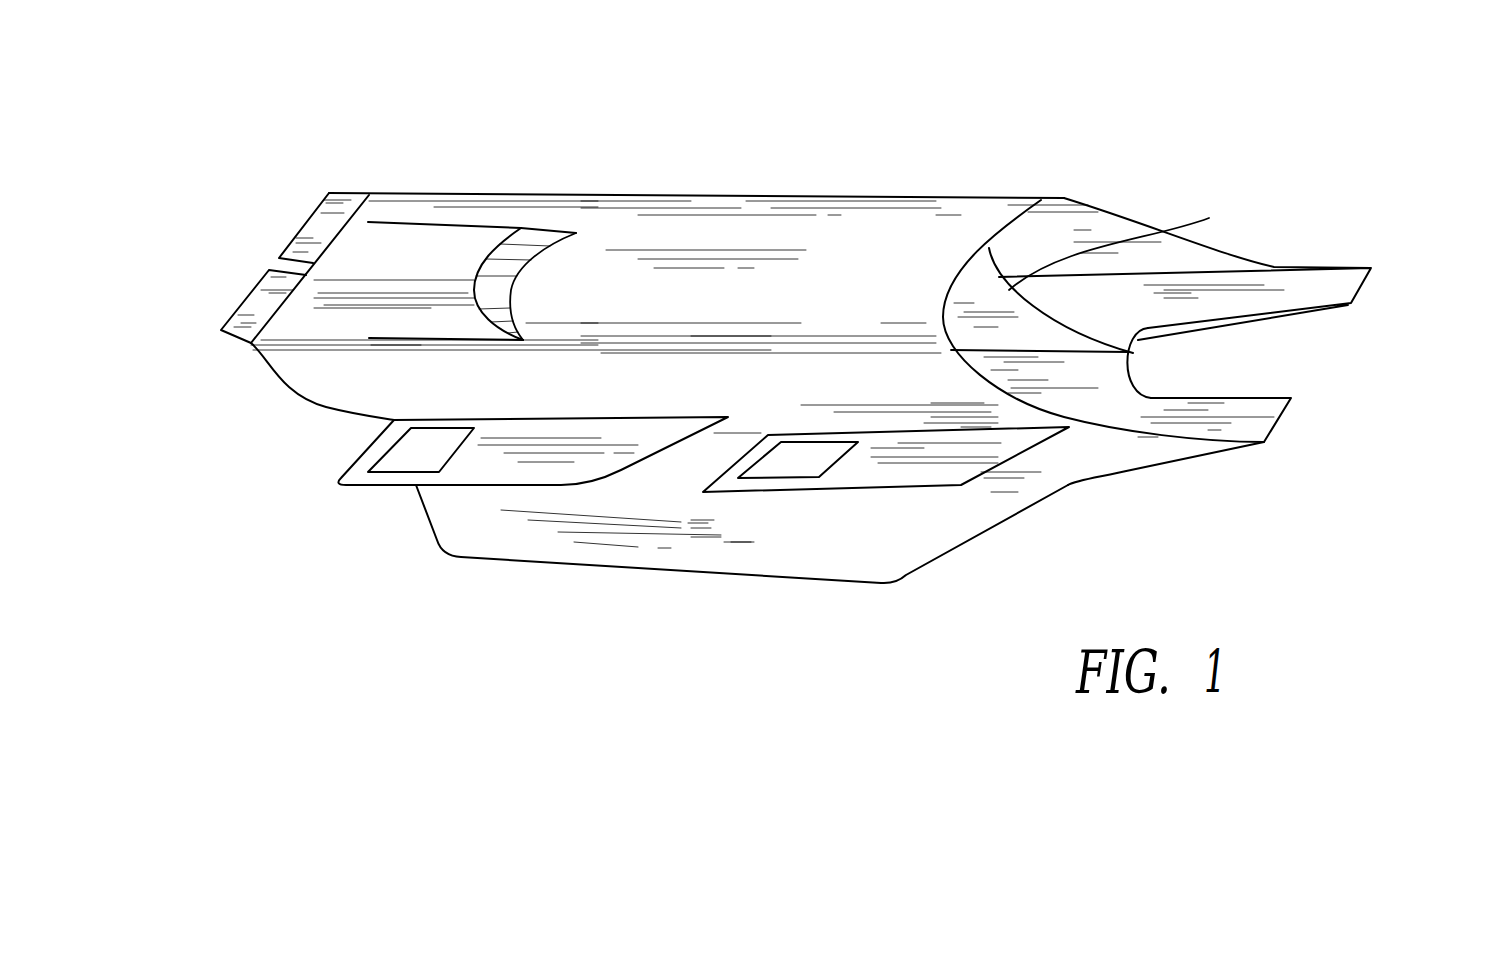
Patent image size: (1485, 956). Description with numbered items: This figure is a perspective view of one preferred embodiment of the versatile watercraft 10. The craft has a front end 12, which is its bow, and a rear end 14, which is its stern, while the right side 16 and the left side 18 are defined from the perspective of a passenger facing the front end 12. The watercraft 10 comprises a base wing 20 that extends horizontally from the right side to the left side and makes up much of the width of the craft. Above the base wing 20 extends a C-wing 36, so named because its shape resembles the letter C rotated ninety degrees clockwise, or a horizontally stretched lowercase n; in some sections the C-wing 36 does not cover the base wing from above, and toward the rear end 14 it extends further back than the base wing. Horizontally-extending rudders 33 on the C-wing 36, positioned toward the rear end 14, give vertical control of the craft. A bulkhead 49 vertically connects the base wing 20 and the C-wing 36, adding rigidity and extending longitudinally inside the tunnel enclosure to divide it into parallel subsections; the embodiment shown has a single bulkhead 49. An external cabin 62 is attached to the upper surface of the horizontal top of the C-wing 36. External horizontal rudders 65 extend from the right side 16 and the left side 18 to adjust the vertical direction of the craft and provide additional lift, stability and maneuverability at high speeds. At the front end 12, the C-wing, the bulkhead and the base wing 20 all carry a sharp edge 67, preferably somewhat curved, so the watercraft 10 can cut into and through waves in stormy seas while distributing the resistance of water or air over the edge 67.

The watercraft 10 is at (873, 65).
The front end 12 is at (1342, 366).
The rear end 14 is at (252, 256).
The right side 16 is at (703, 559).
The left side 18 is at (730, 102).
The base wing 20 is at (1063, 377).
The horizontally-extending rudders 33 is at (322, 212).
The C-wing 36 is at (865, 238).
The bulkhead 49 is at (1022, 332).
The external cabin 62 is at (455, 232).
The external horizontal rudders 65 is at (767, 468).
The sharp edge 67 is at (1122, 220).